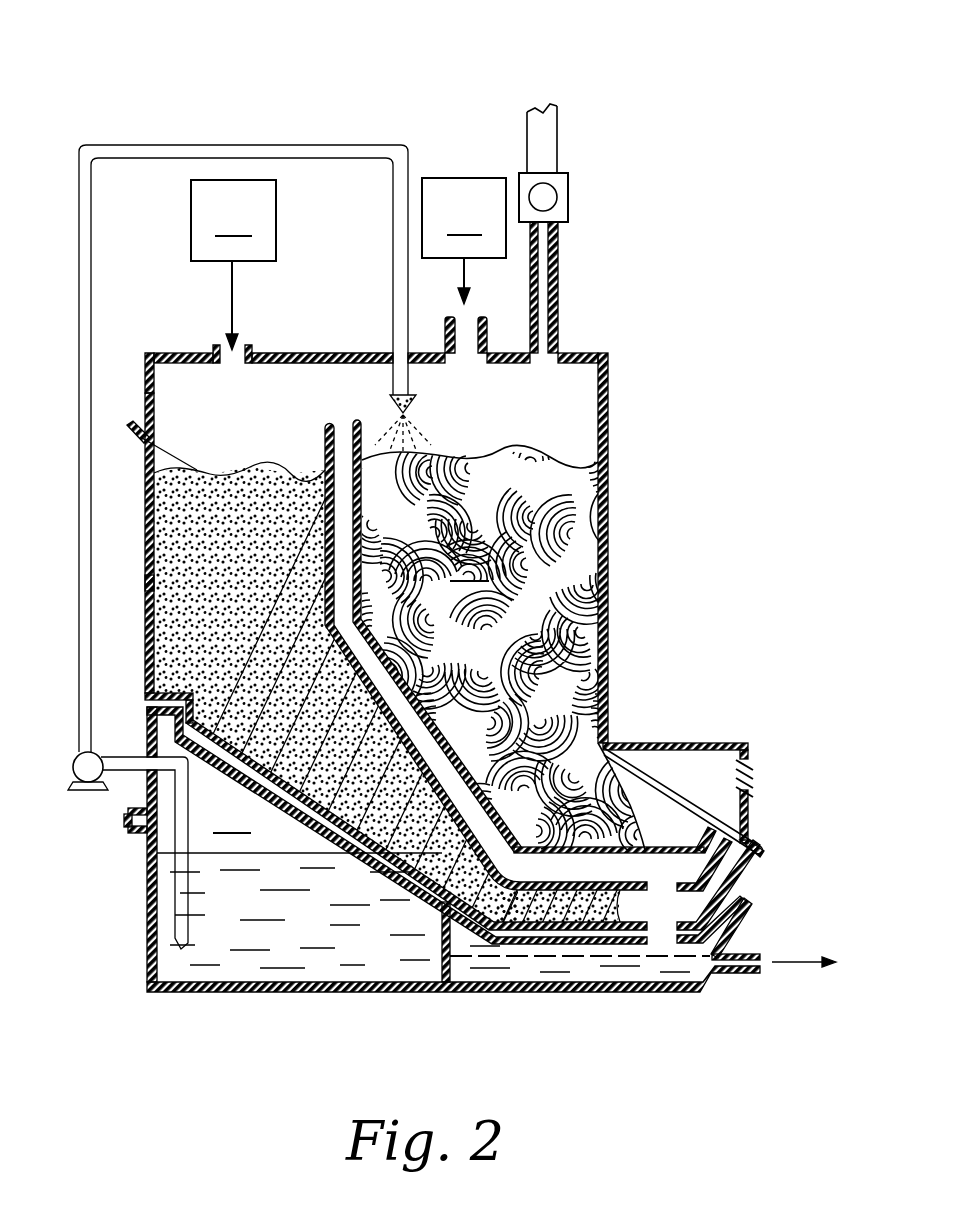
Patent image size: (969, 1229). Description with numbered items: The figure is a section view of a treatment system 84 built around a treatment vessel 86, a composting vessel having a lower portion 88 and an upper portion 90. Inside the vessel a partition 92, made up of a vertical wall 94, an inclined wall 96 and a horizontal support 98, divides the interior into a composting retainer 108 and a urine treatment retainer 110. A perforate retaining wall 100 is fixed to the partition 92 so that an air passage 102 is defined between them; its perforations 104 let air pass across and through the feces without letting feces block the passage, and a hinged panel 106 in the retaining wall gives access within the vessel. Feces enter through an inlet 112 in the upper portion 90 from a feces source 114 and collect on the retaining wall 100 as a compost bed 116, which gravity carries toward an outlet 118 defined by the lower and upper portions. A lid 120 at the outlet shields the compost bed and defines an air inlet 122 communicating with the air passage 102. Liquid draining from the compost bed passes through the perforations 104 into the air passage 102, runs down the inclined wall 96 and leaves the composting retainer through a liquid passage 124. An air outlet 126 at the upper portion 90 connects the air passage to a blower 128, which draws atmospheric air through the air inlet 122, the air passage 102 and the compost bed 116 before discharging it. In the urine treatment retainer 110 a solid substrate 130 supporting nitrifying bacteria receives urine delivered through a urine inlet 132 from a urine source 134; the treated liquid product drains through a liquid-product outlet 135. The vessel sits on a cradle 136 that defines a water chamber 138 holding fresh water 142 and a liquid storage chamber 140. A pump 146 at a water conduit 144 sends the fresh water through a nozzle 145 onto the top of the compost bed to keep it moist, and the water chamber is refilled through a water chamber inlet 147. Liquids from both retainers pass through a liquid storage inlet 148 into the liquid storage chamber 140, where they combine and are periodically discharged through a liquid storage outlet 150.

The treatment system 84 is at (636, 78).
The treatment vessel 86 is at (618, 407).
The lower portion 88 is at (145, 520).
The upper portion 90 is at (145, 385).
The partition 92 is at (314, 444).
The vertical wall 94 is at (337, 535).
The inclined wall 96 is at (340, 645).
The horizontal support 98 is at (553, 898).
The perforate retaining wall 100 is at (357, 420).
The air passage 102 is at (492, 840).
The perforations 104 is at (345, 420).
The hinged panel 106 is at (678, 848).
The composting retainer 108 is at (616, 595).
The urine treatment retainer 110 is at (137, 583).
The inlet 112 is at (467, 352).
The feces source 114 is at (464, 241).
The compost bed 116 is at (501, 648).
The outlet 118 is at (682, 788).
The lid 120 is at (652, 743).
The air inlet 122 is at (755, 778).
The liquid passage 124 is at (663, 882).
The air outlet 126 is at (543, 357).
The blower 128 is at (568, 197).
The solid substrate 130 is at (207, 663).
The urine inlet 132 is at (230, 355).
The urine source 134 is at (233, 265).
The liquid-product outlet 135 is at (668, 925).
The cradle 136 is at (137, 955).
The water chamber 138 is at (453, 849).
The liquid storage chamber 140 is at (627, 947).
The fresh water 142 is at (332, 965).
The water conduit 144 is at (166, 876).
The nozzle 145 is at (412, 398).
The pump 146 is at (75, 760).
The water chamber inlet 147 is at (140, 832).
The liquid storage inlet 148 is at (667, 943).
The liquid storage outlet 150 is at (737, 970).